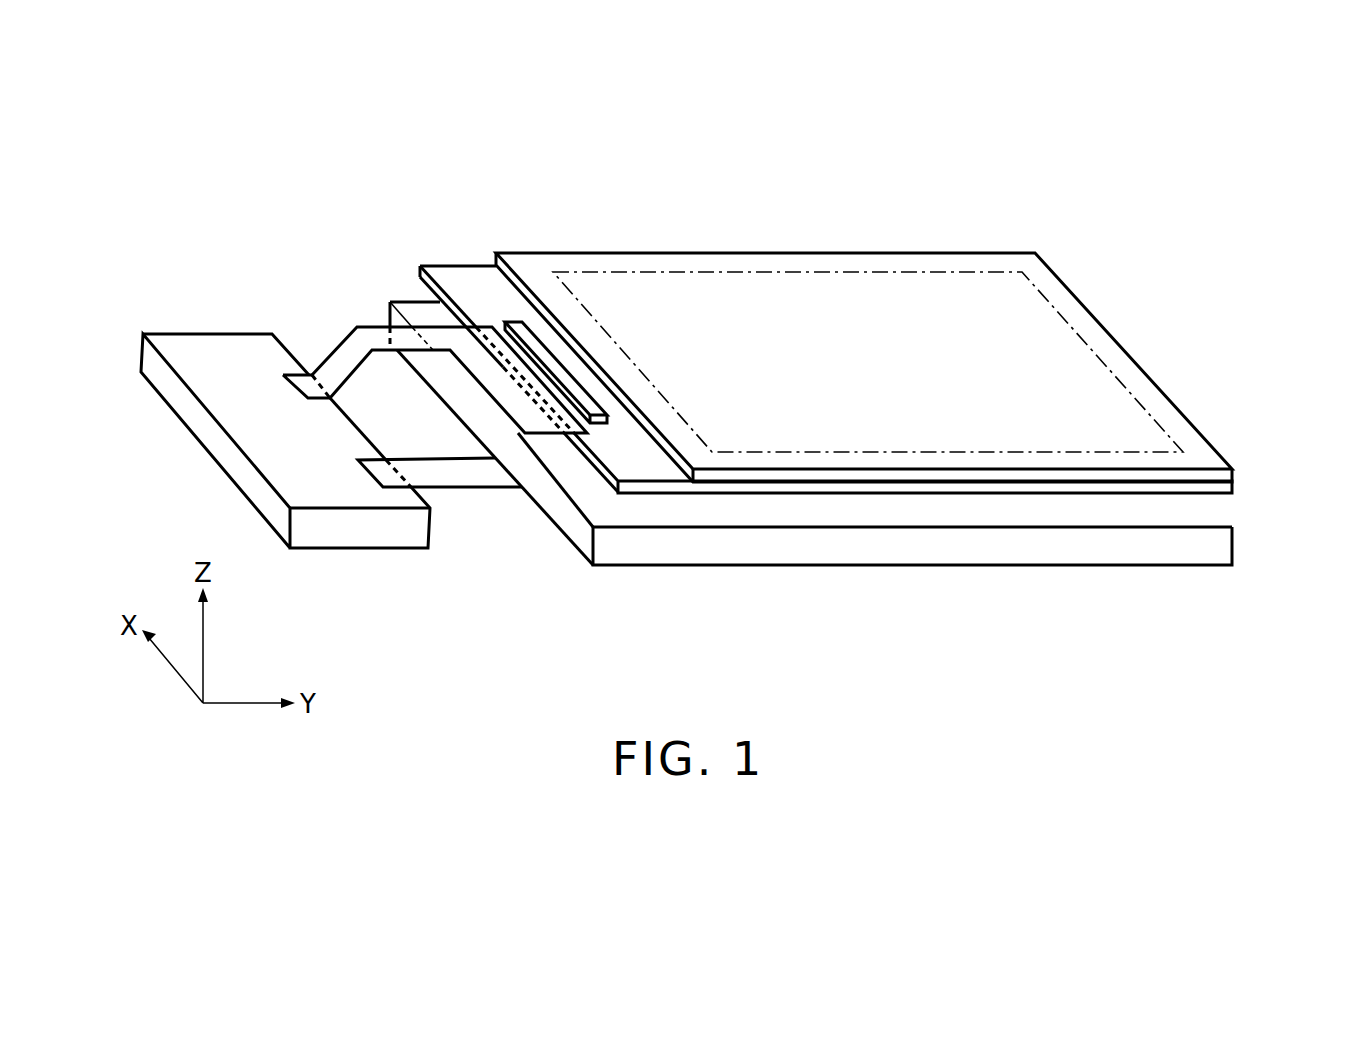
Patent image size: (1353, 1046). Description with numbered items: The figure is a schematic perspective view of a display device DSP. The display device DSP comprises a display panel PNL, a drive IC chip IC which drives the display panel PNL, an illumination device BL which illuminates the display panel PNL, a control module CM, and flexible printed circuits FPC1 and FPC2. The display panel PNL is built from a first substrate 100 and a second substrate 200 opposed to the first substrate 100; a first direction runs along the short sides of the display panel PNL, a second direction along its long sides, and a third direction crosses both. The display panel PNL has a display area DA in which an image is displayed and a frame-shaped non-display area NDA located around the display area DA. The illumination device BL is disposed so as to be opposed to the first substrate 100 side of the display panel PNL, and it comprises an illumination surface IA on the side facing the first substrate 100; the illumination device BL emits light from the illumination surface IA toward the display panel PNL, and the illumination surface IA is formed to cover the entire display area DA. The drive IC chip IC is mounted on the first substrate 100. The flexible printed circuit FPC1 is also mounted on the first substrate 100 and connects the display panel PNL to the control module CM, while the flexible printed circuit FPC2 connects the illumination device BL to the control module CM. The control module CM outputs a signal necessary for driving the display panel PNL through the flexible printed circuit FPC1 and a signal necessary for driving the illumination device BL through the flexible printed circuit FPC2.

The display device DSP is at (1163, 220).
The display panel PNL is at (1246, 478).
The first substrate 100 is at (449, 264).
The second substrate 200 is at (514, 253).
The display area DA is at (846, 280).
The non-display area NDA is at (776, 262).
The drive IC chip IC is at (598, 426).
The illumination device BL is at (671, 566).
The illumination surface IA is at (1078, 514).
The flexible printed circuit FPC1 is at (358, 325).
The flexible printed circuit FPC2 is at (480, 492).
The control module CM is at (220, 333).